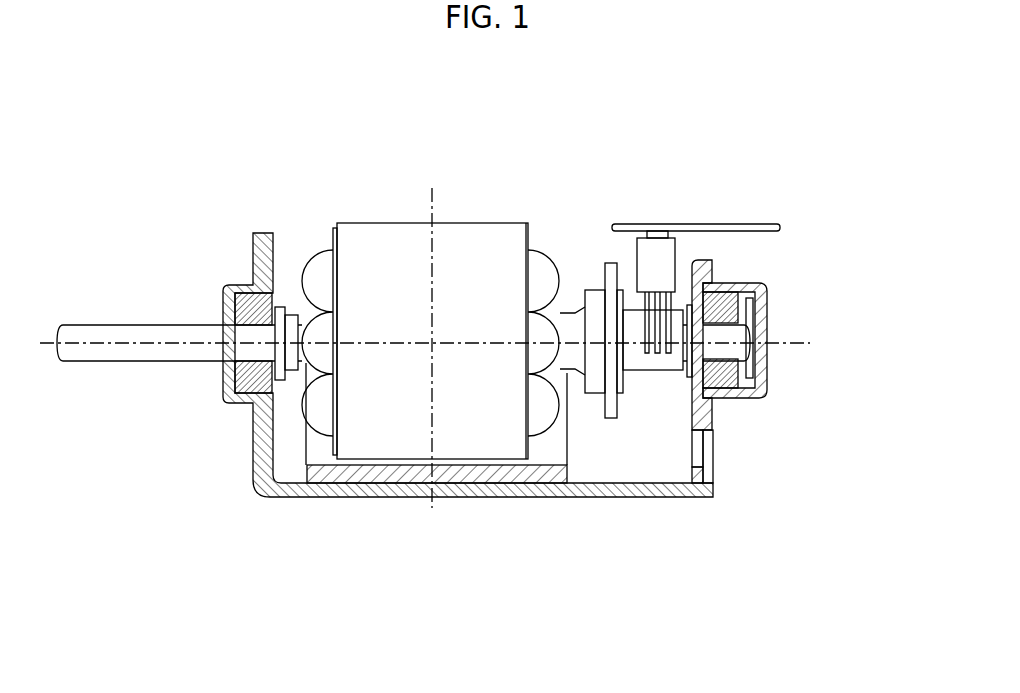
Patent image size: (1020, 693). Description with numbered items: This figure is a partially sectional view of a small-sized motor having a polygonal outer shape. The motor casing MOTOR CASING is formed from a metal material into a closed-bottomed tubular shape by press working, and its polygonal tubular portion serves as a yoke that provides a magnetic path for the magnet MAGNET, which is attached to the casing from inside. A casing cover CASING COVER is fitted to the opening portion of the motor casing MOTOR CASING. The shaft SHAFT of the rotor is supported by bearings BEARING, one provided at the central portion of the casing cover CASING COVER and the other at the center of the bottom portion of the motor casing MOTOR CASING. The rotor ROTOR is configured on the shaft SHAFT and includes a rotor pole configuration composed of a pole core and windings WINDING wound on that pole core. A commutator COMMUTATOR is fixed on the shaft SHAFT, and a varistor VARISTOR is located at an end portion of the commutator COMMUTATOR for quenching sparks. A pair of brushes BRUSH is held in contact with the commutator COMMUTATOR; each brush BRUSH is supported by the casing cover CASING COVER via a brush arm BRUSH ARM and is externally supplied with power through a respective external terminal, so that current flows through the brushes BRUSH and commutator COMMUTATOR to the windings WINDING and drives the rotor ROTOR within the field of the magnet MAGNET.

The shaft SHAFT is at (130, 357).
The bearing BEARING is at (242, 305).
The winding WINDING is at (322, 263).
The rotor ROTOR is at (392, 243).
The varistor VARISTOR is at (610, 272).
The brush arm BRUSH ARM is at (665, 253).
The casing cover CASING COVER is at (715, 407).
The magnet MAGNET is at (330, 472).
The motor casing MOTOR CASING is at (540, 497).
The brush BRUSH is at (645, 353).
The commutator COMMUTATOR is at (658, 363).